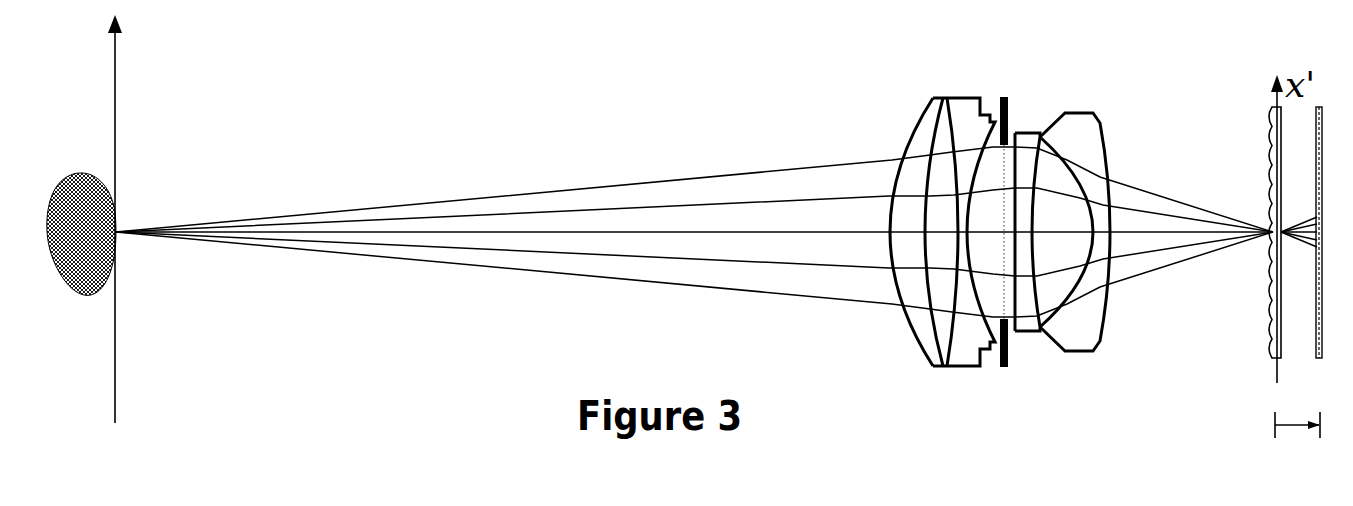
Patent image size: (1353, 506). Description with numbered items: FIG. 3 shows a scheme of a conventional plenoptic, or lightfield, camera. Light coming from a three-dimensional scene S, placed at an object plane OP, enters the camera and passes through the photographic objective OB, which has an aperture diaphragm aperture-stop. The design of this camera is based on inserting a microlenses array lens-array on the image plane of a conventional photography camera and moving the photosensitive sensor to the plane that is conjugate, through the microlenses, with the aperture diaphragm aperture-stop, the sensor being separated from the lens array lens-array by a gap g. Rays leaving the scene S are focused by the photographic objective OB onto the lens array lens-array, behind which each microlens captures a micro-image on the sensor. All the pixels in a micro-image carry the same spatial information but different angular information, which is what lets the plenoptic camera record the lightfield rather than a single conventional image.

The 3D scene S is at (81, 252).
The object plane OP is at (196, 219).
The photographic objective OB is at (977, 224).
The aperture diaphragm aperture-stop is at (926, 271).
The microlenses array lens-array is at (1193, 248).
The gap between lens array and sensor g is at (1297, 406).